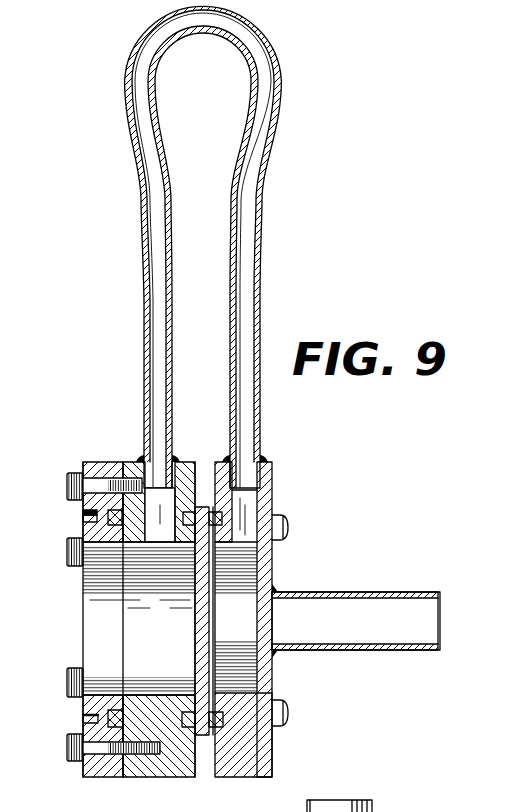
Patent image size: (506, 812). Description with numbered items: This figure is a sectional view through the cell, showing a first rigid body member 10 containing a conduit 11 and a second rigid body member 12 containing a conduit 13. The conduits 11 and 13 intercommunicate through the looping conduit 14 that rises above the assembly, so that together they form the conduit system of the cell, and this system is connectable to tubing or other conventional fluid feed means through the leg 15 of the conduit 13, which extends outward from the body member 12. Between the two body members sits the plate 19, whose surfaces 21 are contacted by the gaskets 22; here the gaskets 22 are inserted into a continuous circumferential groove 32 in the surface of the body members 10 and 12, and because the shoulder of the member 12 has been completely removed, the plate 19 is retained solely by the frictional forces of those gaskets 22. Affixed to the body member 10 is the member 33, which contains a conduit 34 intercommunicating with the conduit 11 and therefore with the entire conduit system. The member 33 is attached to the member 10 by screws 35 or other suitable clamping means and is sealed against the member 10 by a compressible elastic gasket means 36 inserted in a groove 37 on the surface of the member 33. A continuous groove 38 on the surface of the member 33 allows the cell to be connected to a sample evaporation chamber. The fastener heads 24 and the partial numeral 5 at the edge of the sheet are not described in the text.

The conduit 14 is at (258, 217).
The member 33 is at (116, 461).
The continuous circumferential groove 32 is at (185, 462).
The conduit 34 is at (98, 638).
The conduit 11 is at (137, 600).
The first rigid body member 10 is at (157, 777).
The plate 19 is at (201, 507).
The surfaces 21 is at (195, 618).
The conduit 13 is at (268, 584).
The second rigid body member 12 is at (247, 777).
The leg 15 is at (345, 620).
The cap screw 24 is at (285, 523).
The screws 35 is at (67, 478).
The continuous groove 38 is at (83, 513).
The groove 37 is at (83, 522).
The compressible elastic gasket means 36 is at (114, 710).
The gaskets 22 is at (186, 712).
The partial numeral 5 is at (5, 611).